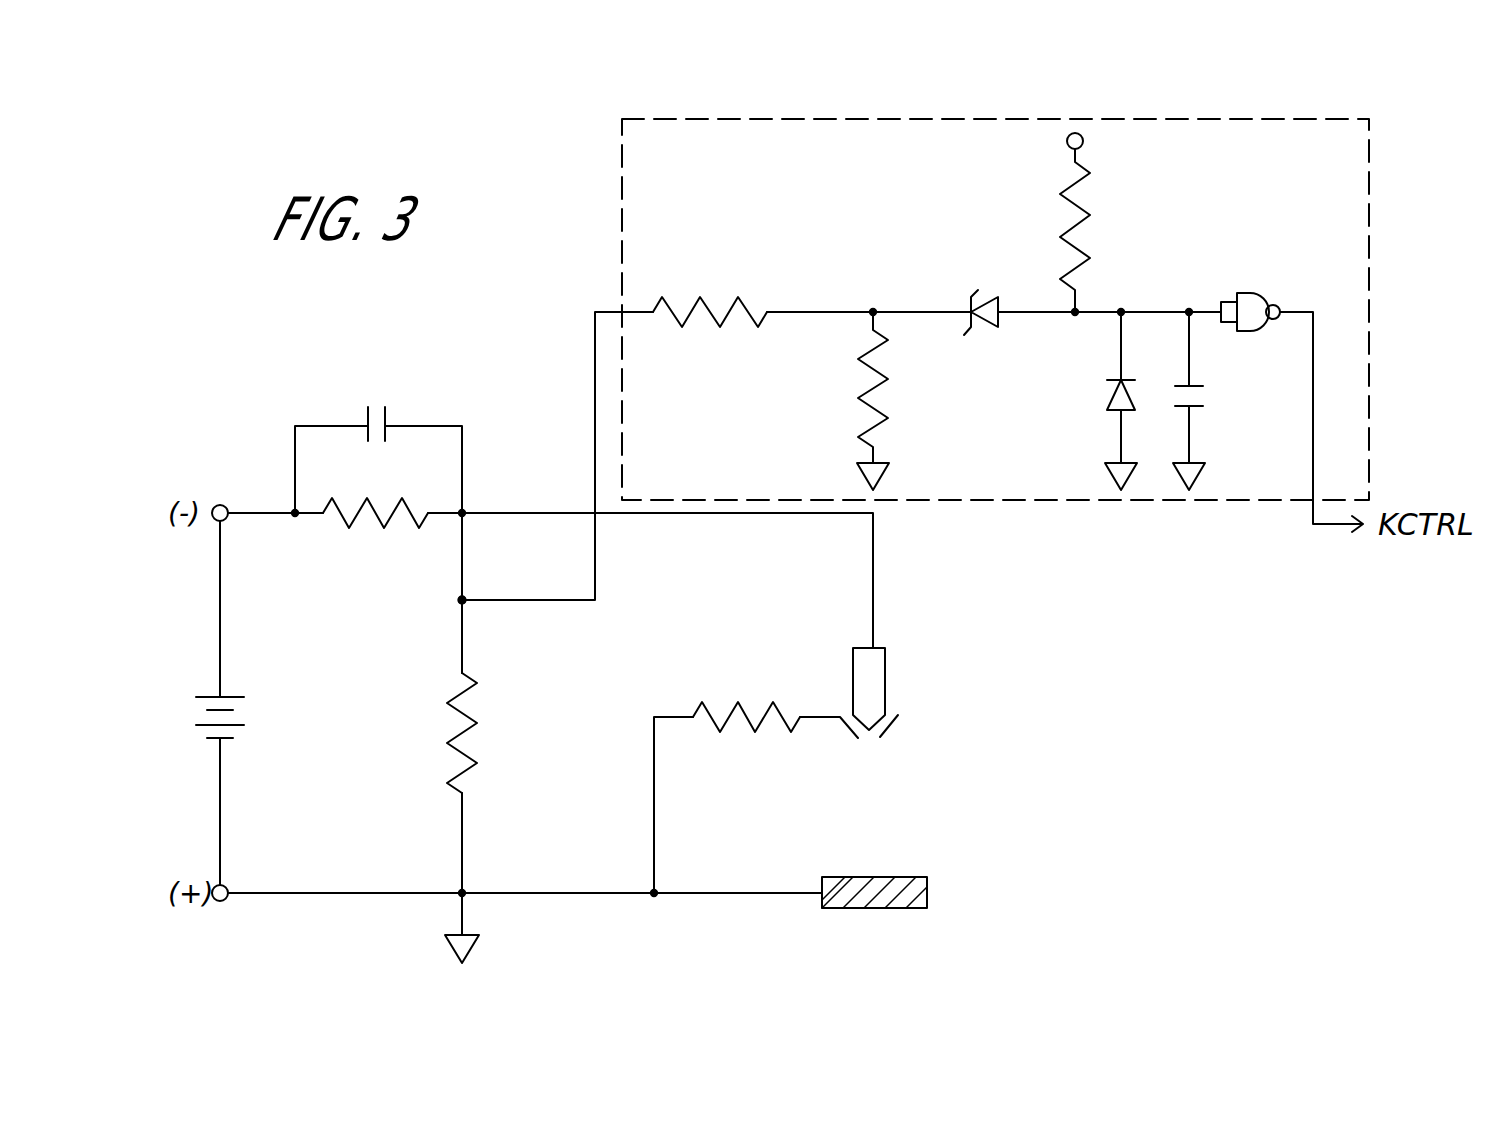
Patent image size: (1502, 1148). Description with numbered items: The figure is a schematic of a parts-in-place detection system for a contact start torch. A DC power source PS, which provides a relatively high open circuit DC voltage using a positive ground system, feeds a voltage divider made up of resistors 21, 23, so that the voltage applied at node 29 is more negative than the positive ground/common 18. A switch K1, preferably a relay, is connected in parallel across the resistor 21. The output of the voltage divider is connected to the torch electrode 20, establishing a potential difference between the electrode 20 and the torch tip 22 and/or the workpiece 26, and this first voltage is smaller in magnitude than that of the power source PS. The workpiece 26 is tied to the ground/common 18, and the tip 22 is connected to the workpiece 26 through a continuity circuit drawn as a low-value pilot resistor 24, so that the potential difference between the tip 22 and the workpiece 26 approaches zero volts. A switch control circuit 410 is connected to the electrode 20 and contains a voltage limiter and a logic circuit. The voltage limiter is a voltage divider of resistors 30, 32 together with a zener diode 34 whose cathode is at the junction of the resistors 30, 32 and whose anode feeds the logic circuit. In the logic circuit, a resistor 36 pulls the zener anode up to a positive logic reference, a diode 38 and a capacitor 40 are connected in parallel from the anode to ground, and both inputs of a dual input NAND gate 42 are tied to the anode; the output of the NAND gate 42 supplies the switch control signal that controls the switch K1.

The switch control circuit 410 is at (985, 118).
The resistor 30 is at (712, 305).
The resistor 32 is at (880, 383).
The zener diode 34 is at (990, 327).
The resistor 36 is at (1083, 222).
The diode 38 is at (1113, 395).
The capacitor 40 is at (1196, 383).
The dual input NAND gate 42 is at (1247, 292).
The switch K1 is at (388, 424).
The resistor 21 is at (377, 522).
The node 29 is at (458, 600).
The resistor 23 is at (465, 708).
The DC power source PS is at (228, 695).
The positive ground/common 18 is at (462, 920).
The torch electrode 20 is at (888, 676).
The torch tip 22 is at (895, 733).
The resistor 24 is at (770, 718).
The workpiece 26 is at (900, 878).